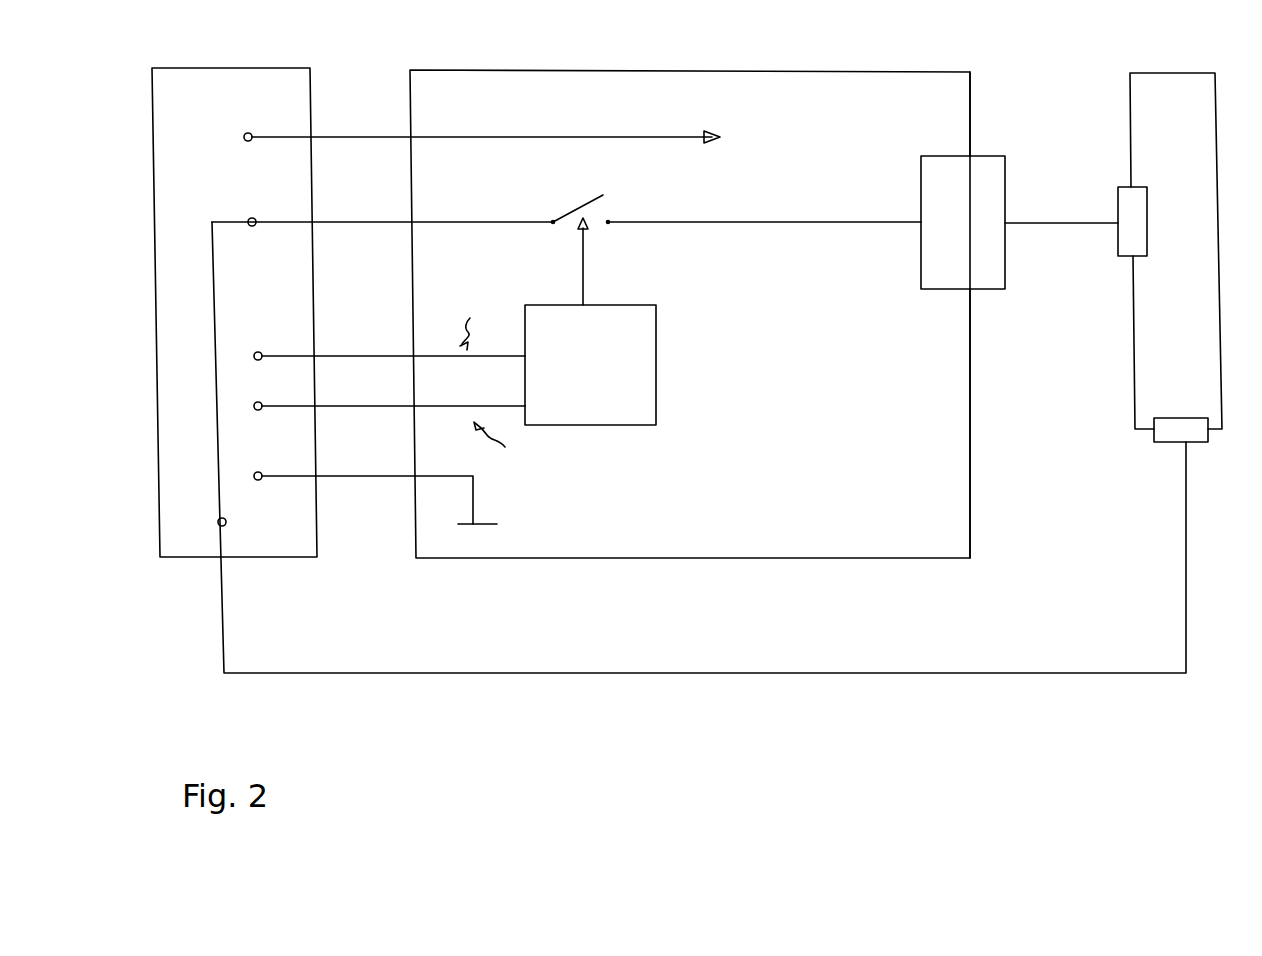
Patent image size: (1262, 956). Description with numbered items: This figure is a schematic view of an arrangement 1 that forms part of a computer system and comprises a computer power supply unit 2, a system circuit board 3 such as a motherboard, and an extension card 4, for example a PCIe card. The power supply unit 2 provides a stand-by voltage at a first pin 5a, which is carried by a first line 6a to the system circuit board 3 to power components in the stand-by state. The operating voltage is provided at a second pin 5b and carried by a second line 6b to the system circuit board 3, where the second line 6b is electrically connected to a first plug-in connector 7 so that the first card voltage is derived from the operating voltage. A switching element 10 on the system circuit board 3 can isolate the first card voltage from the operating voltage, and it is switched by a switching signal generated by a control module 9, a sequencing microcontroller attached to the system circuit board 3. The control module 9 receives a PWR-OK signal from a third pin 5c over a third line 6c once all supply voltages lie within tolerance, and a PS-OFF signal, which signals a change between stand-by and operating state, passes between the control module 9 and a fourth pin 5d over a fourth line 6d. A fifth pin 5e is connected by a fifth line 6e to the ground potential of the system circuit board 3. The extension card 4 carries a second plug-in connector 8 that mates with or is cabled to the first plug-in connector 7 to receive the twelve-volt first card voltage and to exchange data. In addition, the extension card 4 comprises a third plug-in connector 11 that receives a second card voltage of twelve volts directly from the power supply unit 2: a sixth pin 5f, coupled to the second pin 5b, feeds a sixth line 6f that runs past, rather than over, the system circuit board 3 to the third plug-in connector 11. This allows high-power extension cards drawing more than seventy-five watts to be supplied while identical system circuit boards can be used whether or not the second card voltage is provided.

The arrangement 1 is at (692, 757).
The computer power supply unit 2 is at (297, 538).
The system circuit board 3 is at (778, 662).
The extension card 4 is at (1141, 370).
The first pin 5a is at (239, 137).
The second pin 5b is at (248, 218).
The third pin 5c is at (258, 352).
The fourth pin 5d is at (258, 402).
The fifth pin 5e is at (258, 472).
The sixth pin 5f is at (218, 520).
The first line 6a is at (356, 134).
The second line 6b is at (356, 220).
The third line 6c is at (354, 352).
The fourth line 6d is at (332, 406).
The fifth line 6e is at (342, 476).
The sixth line 6f is at (540, 672).
The first plug-in connector 7 is at (1002, 271).
The second plug-in connector 8 is at (1150, 265).
The control module 9 is at (653, 418).
The switching element 10 is at (642, 201).
The third plug-in connector 11 is at (1210, 441).